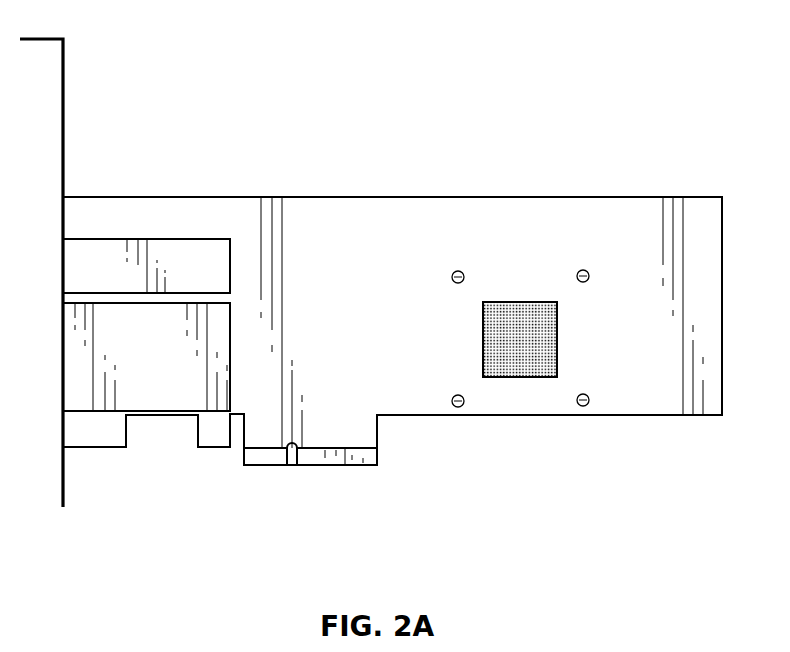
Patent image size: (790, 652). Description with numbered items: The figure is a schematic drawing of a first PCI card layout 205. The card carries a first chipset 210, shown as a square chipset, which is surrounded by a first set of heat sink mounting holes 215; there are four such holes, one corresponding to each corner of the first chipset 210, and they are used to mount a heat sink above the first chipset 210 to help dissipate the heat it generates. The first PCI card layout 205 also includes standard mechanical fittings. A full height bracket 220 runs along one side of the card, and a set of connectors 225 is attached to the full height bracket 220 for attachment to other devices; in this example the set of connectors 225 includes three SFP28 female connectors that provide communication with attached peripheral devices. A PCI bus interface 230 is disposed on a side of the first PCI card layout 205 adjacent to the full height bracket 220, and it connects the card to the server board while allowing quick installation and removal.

The first PCI card layout 205 is at (430, 230).
The first chipset 210 is at (530, 378).
The first set of heat sink mounting holes 215 is at (582, 270).
The full height bracket 220 is at (65, 88).
The set of connectors 225 is at (152, 338).
The PCI bus interface 230 is at (330, 455).